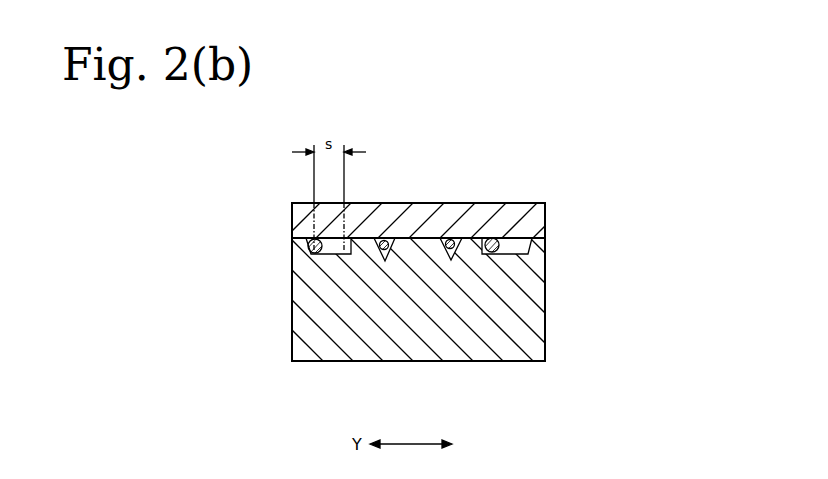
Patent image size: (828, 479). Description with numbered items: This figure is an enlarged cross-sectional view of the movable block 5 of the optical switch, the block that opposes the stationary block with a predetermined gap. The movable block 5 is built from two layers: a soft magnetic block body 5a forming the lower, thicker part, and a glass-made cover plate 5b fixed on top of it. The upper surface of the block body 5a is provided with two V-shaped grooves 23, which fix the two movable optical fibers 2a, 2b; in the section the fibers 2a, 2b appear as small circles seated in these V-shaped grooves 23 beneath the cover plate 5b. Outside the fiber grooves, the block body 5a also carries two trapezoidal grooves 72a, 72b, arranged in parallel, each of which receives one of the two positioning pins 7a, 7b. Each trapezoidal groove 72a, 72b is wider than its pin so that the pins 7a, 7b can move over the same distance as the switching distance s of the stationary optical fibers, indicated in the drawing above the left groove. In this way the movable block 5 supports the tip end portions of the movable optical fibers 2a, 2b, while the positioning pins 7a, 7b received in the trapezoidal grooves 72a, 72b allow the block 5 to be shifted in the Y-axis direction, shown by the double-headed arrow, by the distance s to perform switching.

The movable block 5 is at (549, 193).
The soft magnetic block body 5a is at (536, 330).
The glass-made cover plate 5b is at (537, 213).
The positioning pin 7a is at (492, 242).
The positioning pin 7b is at (310, 243).
The movable optical fiber 2a is at (450, 246).
The movable optical fiber 2b is at (385, 248).
The V-shaped groove 23 is at (384, 262).
The trapezoidal groove 72a is at (535, 251).
The trapezoidal groove 72b is at (323, 254).